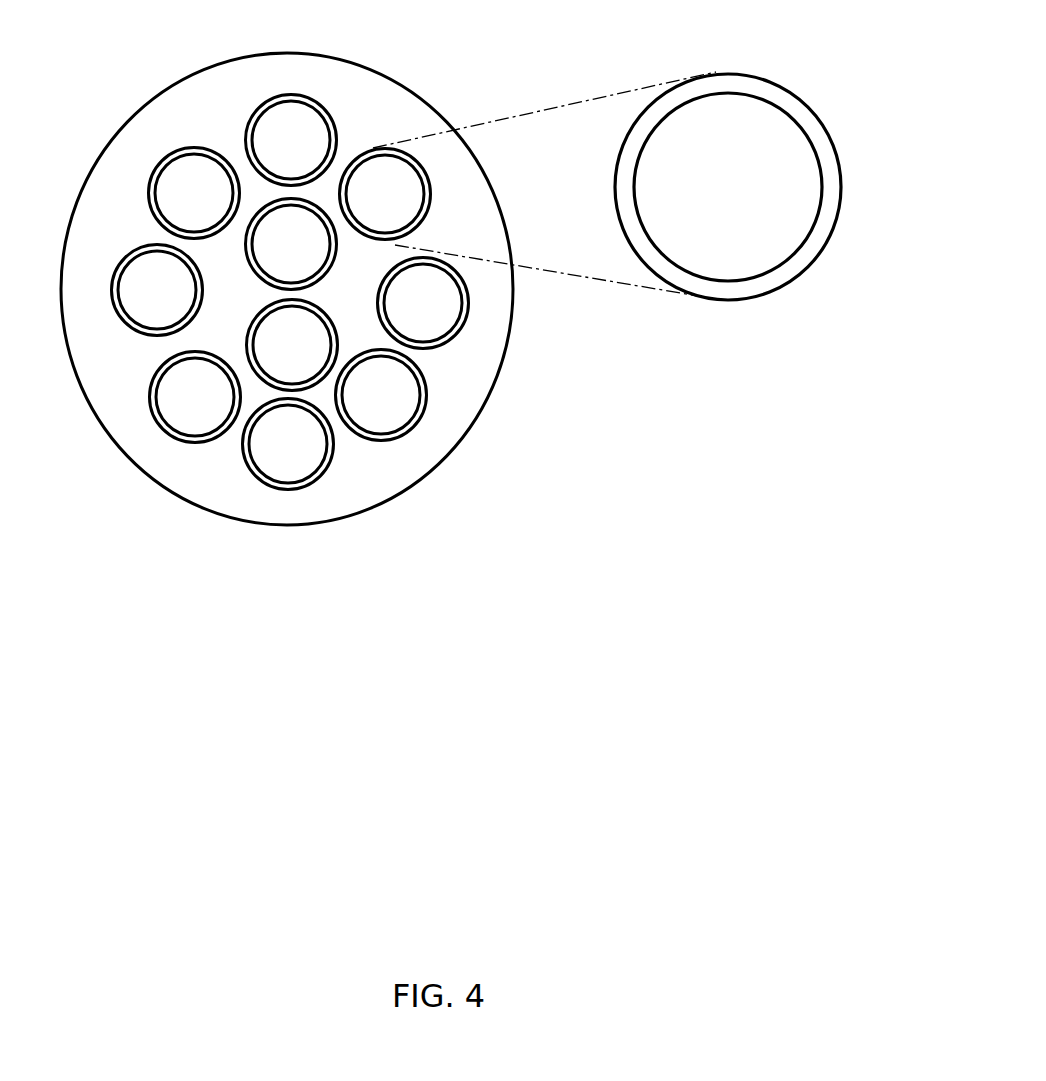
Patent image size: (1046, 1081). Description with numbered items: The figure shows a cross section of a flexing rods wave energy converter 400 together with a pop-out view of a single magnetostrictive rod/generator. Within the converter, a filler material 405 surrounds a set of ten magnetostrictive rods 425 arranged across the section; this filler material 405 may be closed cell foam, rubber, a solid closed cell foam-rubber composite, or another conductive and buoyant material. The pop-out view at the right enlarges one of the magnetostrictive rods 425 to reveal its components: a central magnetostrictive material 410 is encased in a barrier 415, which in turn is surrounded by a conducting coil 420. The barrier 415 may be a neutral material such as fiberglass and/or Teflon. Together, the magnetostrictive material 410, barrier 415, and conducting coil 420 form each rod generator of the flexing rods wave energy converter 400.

The flexing rods wave energy converter 400 is at (312, 340).
The filler material 405 is at (432, 437).
The magnetostrictive material 410 is at (717, 207).
The barrier 415 is at (817, 167).
The conducting coil 420 is at (830, 173).
The magnetostrictive rods 425 is at (343, 110).